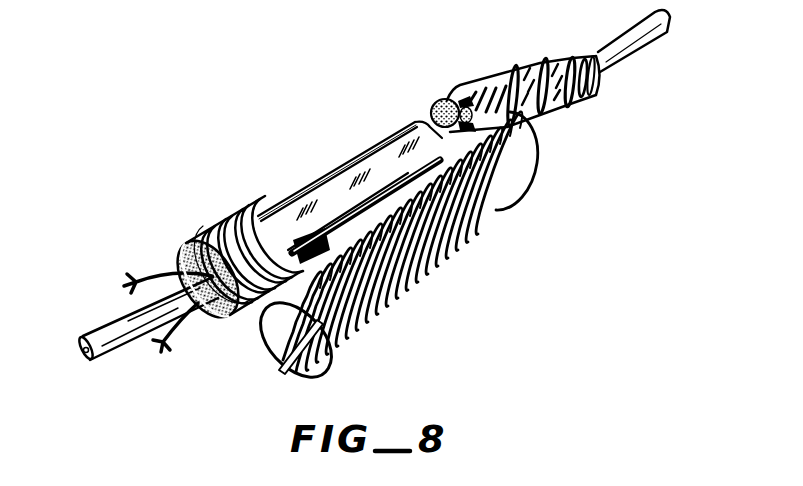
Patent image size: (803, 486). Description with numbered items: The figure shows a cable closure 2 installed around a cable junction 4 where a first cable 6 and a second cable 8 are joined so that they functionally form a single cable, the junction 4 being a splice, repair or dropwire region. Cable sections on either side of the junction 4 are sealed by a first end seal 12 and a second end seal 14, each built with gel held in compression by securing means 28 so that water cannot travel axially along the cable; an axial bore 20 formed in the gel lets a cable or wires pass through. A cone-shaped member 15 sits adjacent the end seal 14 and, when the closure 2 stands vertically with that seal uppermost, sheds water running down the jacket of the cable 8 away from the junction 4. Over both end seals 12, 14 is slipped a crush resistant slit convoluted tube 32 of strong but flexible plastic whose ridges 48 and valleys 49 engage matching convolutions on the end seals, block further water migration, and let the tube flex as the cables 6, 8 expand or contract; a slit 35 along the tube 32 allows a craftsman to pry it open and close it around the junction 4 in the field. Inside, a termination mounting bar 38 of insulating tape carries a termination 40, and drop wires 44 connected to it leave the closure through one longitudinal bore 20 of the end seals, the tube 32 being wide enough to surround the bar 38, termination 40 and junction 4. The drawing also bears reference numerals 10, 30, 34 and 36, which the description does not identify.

The closure 2 is at (508, 334).
The cable junction 4 is at (423, 100).
The first cable 6 is at (110, 323).
The second cable 8 is at (660, 40).
The alignment plate 10 is at (405, 128).
The first end seal 12 is at (252, 200).
The second end seal 14 is at (495, 56).
The cone-shaped member 15 is at (553, 58).
The axial bore 20 is at (187, 243).
The securing means 28 is at (221, 222).
The ferrule core 30 is at (212, 318).
The slit convoluted tube 32 is at (524, 203).
The helical spring 34 is at (343, 356).
The slit 35 is at (290, 357).
The spring end turn 36 is at (538, 173).
The termination mounting bar 38 is at (378, 222).
The termination 40 is at (340, 207).
The drop wires 44 is at (147, 270).
The ridges 48 is at (463, 230).
The valleys 49 is at (467, 230).